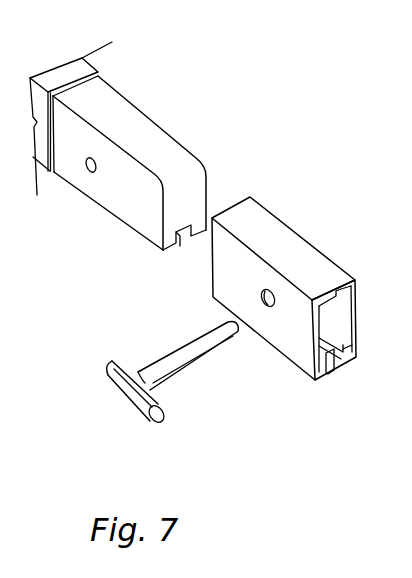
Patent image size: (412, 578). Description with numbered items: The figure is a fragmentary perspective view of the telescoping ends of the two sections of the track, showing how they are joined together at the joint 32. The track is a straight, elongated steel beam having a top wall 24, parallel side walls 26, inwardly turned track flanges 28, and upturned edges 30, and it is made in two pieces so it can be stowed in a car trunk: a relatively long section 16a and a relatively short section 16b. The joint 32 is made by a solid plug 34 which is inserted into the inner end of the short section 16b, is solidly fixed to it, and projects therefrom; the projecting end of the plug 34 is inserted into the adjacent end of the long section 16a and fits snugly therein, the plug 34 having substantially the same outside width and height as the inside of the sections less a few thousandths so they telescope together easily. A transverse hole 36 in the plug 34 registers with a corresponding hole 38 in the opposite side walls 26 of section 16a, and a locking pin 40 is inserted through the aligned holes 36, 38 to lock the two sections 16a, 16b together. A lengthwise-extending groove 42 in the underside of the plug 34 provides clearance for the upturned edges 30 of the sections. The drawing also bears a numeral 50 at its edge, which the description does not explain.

The long track section 16a is at (347, 259).
The short track section 16b is at (68, 72).
The top wall 24 is at (308, 255).
The side walls 26 is at (344, 316).
The track flanges 28 is at (348, 362).
The upturned edges 30 is at (336, 363).
The joint 32 is at (242, 181).
The plug 34 is at (130, 200).
The transverse hole 36 is at (87, 170).
The hole 38 is at (268, 289).
The locking pin 40 is at (170, 360).
The groove 42 is at (189, 241).
The panel 50 is at (401, 145).